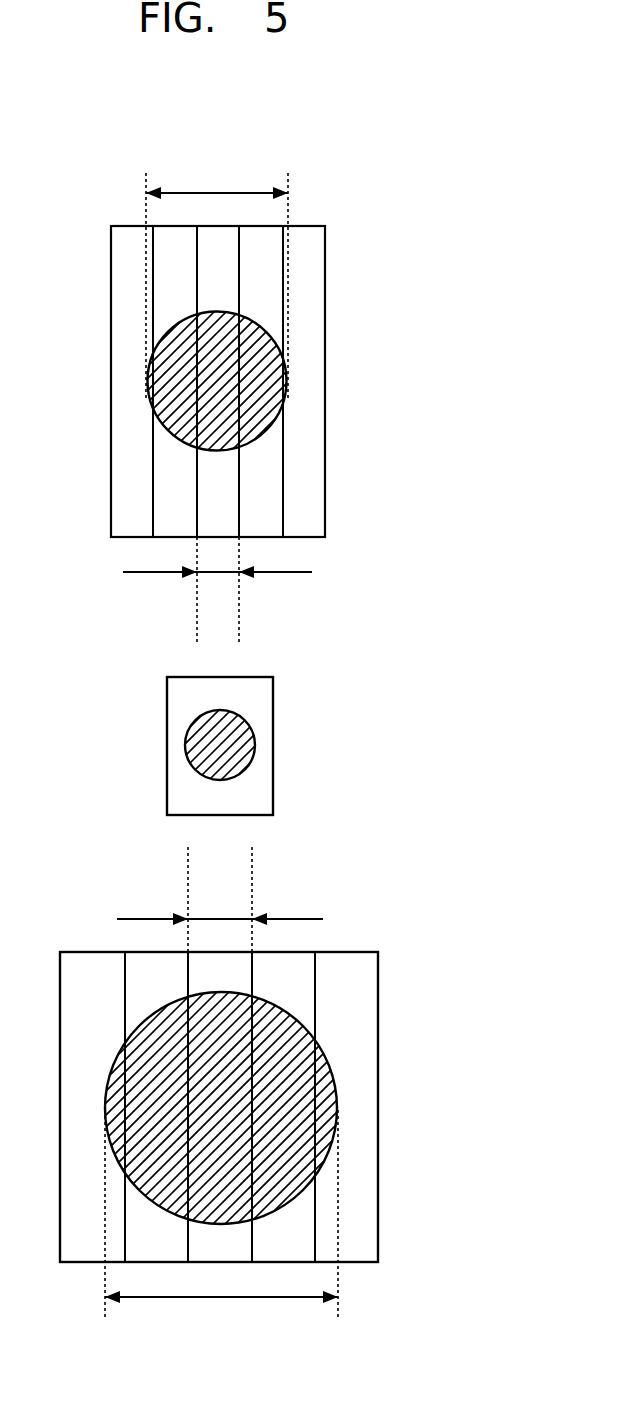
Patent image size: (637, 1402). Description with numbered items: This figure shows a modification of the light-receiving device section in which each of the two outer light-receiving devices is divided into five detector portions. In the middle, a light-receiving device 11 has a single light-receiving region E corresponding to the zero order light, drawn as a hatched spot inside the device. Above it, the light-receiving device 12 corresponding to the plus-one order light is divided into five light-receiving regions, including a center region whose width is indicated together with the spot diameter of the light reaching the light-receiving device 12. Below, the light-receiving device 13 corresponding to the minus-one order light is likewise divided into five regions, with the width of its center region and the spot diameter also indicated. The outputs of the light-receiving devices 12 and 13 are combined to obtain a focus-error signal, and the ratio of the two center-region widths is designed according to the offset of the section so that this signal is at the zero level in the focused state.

The light-receiving device 11 is at (236, 746).
The light-receiving device 12 is at (337, 365).
The light-receiving device 13 is at (390, 1108).
The light-receiving region E is at (178, 706).